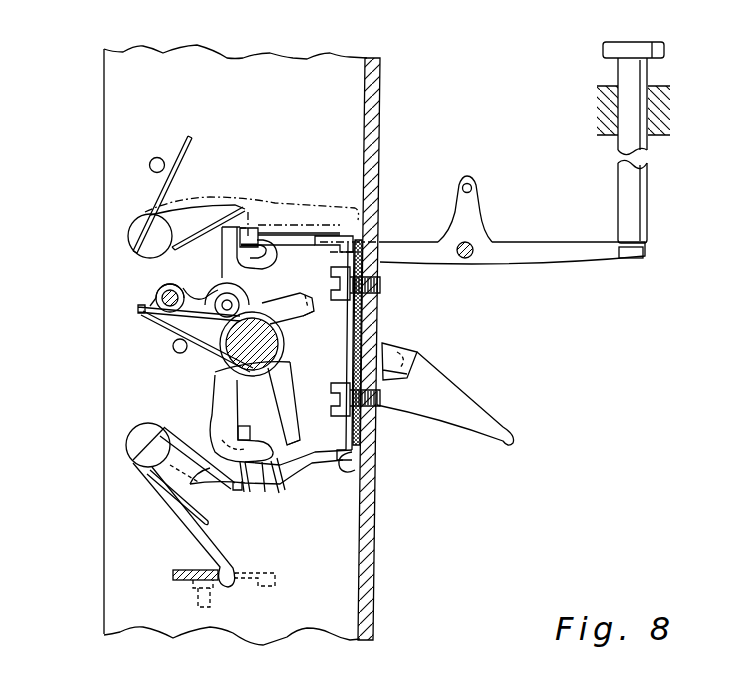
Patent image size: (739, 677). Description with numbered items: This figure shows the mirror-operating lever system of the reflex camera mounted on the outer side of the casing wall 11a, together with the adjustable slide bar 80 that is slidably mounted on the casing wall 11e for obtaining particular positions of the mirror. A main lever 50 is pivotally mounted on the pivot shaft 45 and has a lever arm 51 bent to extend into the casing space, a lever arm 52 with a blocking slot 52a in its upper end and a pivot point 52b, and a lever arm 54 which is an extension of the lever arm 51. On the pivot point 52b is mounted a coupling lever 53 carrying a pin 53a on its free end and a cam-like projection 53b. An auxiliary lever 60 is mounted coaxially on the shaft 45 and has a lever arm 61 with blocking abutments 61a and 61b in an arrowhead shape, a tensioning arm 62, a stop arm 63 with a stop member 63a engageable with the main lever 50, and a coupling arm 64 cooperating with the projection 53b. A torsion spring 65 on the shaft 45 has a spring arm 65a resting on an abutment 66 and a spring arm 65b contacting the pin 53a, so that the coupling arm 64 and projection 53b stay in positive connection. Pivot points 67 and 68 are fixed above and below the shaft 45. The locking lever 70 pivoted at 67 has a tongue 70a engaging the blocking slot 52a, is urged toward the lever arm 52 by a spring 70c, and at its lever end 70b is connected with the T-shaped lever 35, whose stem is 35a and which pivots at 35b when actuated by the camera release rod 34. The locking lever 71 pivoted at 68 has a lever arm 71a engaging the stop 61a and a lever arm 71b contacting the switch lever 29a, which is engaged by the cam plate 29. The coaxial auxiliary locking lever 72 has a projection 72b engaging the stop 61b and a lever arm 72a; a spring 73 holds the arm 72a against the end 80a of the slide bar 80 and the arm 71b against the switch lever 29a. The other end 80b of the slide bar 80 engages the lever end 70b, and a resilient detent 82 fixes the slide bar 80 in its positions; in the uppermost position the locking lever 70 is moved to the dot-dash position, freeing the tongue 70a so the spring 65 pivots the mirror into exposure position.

The casing wall 11a is at (130, 113).
The casing wall 11e is at (364, 548).
The cam plate 29 is at (273, 583).
The switch lever 29a is at (183, 580).
The camera release rod 34 is at (632, 70).
The T-shaped lever 35 is at (472, 235).
The stem of the T-shaped lever 35a is at (470, 207).
The pivot of the T-shaped lever 35b is at (473, 256).
The pivot shaft 45 is at (262, 333).
The main lever 50 is at (307, 377).
The lever arm 51 is at (413, 368).
The lever arm 52 is at (282, 248).
The blocking slot 52a is at (252, 245).
The pivot point 52b is at (225, 315).
The coupling lever 53 is at (220, 320).
The pin 53a is at (165, 285).
The cam-like projection 53b is at (197, 289).
The lever arm 54 is at (460, 400).
The auxiliary lever 60 is at (240, 366).
The lever arm 61 is at (223, 417).
The blocking abutment 61a is at (252, 463).
The blocking abutment 61b is at (243, 483).
The tensioning arm 62 is at (294, 425).
The stop arm 63 is at (288, 307).
The stop member 63a is at (308, 318).
The coupling arm 64 is at (214, 268).
The torsion spring 65 is at (177, 368).
The spring arm 65a is at (187, 304).
The spring arm 65b is at (162, 295).
The abutment 66 is at (177, 348).
The pivot point 67 is at (137, 232).
The pivot point 68 is at (133, 440).
The locking lever 70 is at (193, 207).
The tongue 70a is at (249, 225).
The lever end 70b is at (340, 237).
The spring 70c is at (226, 203).
The locking lever 71 is at (148, 467).
The lever arm 71a is at (242, 427).
The lever arm 71b is at (207, 542).
The auxiliary locking lever 72 is at (290, 468).
The lever arm 72a is at (343, 465).
The projection 72b is at (233, 485).
The spring 73 is at (165, 498).
The adjustable slide bar 80 is at (355, 352).
The end of the slide bar 80a is at (357, 445).
The end of the slide bar 80b is at (355, 233).
The resilient detent 82 is at (357, 328).